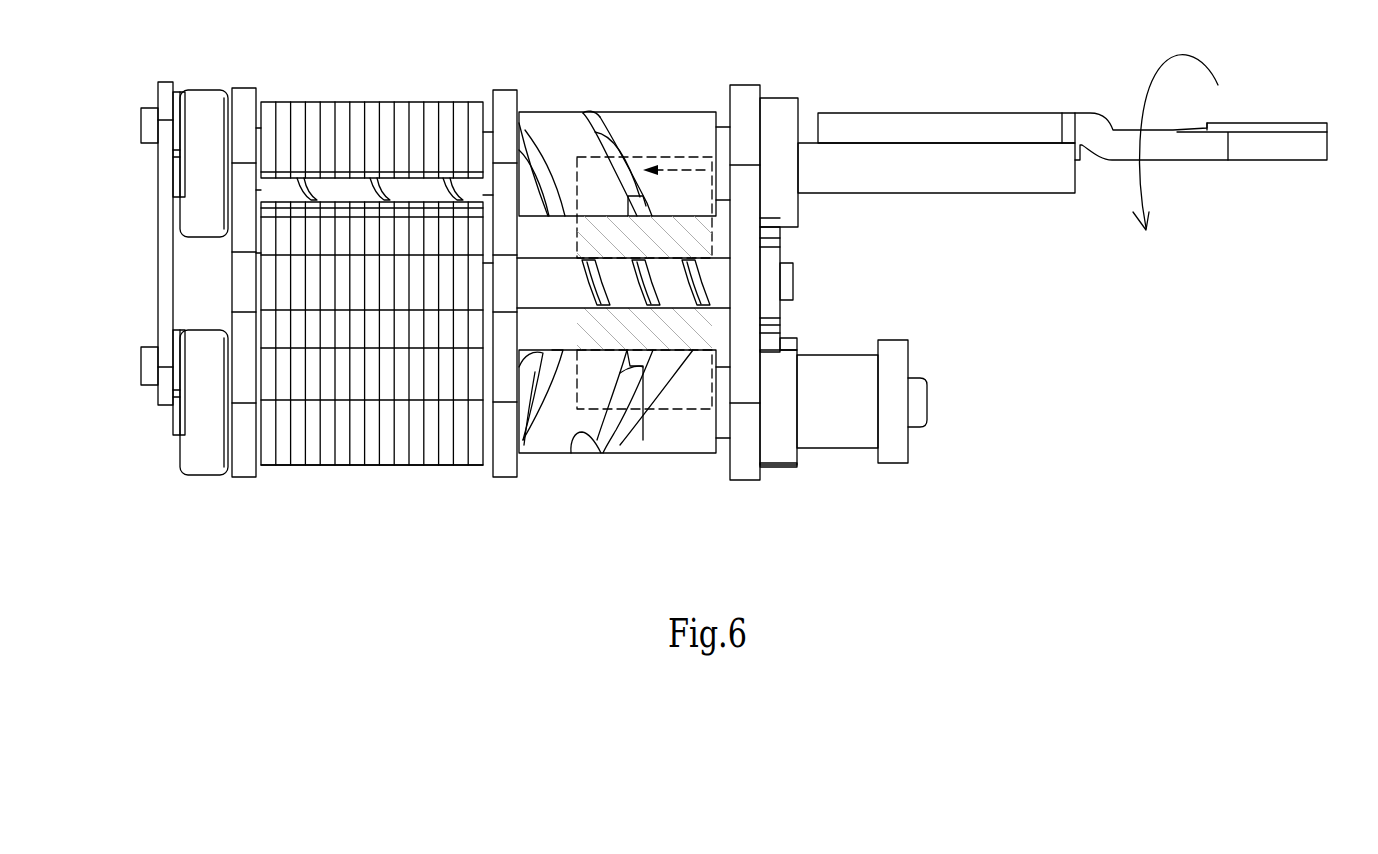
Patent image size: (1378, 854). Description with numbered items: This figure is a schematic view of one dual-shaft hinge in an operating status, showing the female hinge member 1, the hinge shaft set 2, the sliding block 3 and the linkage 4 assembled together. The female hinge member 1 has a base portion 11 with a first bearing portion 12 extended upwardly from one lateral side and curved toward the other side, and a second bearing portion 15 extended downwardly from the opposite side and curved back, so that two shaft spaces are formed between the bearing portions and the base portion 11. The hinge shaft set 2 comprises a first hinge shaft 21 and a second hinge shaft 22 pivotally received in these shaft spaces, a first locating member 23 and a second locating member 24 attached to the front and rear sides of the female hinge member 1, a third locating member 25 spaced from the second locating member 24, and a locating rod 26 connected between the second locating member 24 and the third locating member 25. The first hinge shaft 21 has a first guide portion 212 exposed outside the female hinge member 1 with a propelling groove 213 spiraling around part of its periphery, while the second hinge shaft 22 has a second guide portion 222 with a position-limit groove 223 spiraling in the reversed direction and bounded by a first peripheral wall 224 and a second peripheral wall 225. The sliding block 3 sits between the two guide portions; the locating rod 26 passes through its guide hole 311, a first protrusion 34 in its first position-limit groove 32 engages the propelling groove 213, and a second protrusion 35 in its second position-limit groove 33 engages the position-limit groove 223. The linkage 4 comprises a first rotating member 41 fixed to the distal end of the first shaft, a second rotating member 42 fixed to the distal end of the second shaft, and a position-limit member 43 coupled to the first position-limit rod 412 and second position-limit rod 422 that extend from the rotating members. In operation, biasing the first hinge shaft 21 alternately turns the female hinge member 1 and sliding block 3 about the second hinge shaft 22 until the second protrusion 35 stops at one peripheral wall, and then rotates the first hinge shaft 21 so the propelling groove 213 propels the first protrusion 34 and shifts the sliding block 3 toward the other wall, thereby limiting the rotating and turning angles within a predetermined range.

The female hinge member 1 is at (364, 88).
The base portion 11 is at (275, 284).
The first bearing portion 12 is at (315, 105).
The second bearing portion 15 is at (292, 460).
The hinge shaft set 2 is at (1032, 231).
The first hinge shaft 21 is at (975, 108).
The second hinge shaft 22 is at (900, 473).
The first guide portion 212 is at (657, 120).
The propelling groove 213 is at (597, 120).
The second guide portion 222 is at (698, 450).
The position-limit groove 223 is at (597, 458).
The first peripheral wall 224 is at (643, 440).
The second peripheral wall 225 is at (583, 432).
The first locating member 23 is at (243, 470).
The second locating member 24 is at (497, 470).
The third locating member 25 is at (750, 97).
The locating rod 26 is at (723, 274).
The sliding block 3 is at (733, 250).
The guide hole 311 is at (583, 260).
The first position-limit groove 32 is at (560, 130).
The second position-limit groove 33 is at (688, 349).
The first protrusion 34 is at (690, 220).
The second protrusion 35 is at (620, 445).
The linkage 4 is at (146, 250).
The first rotating member 41 is at (211, 107).
The second rotating member 42 is at (199, 425).
The position-limit member 43 is at (162, 288).
The first position-limit rod 412 is at (148, 122).
The second position-limit rod 422 is at (149, 377).